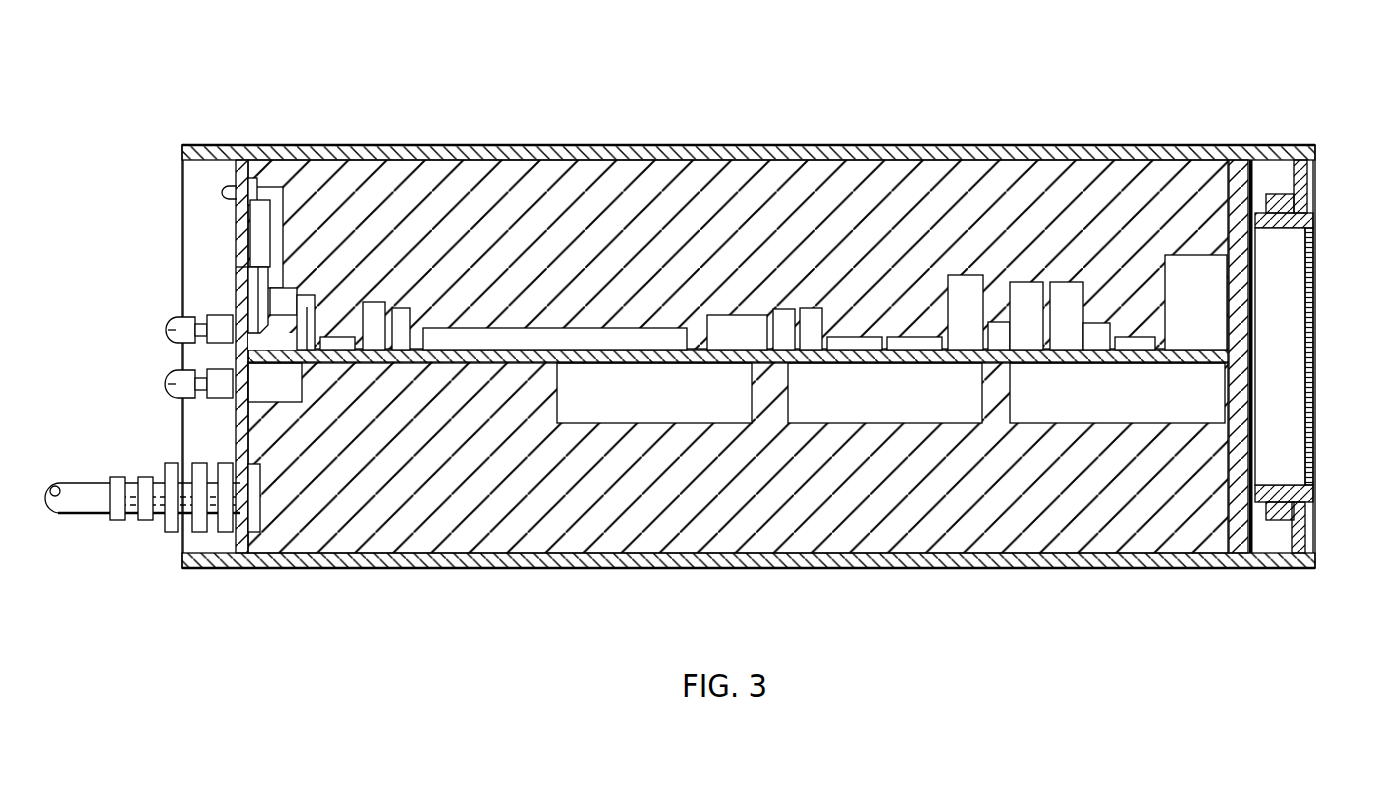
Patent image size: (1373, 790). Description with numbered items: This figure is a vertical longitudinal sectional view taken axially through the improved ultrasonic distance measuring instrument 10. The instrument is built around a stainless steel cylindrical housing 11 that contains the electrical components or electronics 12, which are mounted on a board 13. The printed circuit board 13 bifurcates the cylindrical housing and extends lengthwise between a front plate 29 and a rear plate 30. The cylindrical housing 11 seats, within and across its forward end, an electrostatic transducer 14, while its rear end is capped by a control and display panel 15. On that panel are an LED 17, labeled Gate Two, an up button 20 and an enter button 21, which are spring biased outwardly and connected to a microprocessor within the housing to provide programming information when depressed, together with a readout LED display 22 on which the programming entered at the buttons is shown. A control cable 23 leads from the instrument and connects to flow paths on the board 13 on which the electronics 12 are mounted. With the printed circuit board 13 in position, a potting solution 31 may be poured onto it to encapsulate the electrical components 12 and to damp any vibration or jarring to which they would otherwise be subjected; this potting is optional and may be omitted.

The ultrasonic distance measuring instrument 10 is at (571, 118).
The cylindrical housing 11 is at (914, 146).
The electrical components 12 is at (566, 320).
The board 13 is at (1053, 352).
The electrostatic transducer 14 is at (1313, 291).
The control and display panel 15 is at (183, 245).
The LED 17 is at (222, 192).
The up button 20 is at (172, 384).
The enter button 21 is at (172, 330).
The readout LED display 22 is at (248, 295).
The control cable 23 is at (106, 515).
The front plate 29 is at (1256, 192).
The rear plate 30 is at (241, 166).
The potting solution 31 is at (1162, 522).